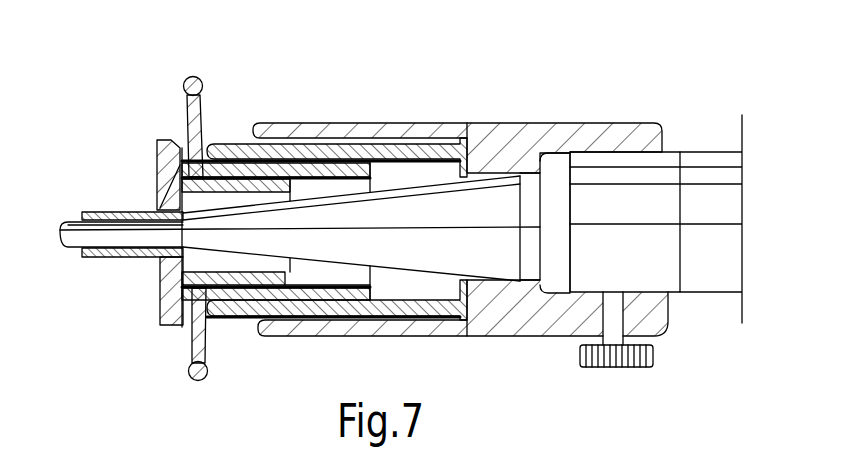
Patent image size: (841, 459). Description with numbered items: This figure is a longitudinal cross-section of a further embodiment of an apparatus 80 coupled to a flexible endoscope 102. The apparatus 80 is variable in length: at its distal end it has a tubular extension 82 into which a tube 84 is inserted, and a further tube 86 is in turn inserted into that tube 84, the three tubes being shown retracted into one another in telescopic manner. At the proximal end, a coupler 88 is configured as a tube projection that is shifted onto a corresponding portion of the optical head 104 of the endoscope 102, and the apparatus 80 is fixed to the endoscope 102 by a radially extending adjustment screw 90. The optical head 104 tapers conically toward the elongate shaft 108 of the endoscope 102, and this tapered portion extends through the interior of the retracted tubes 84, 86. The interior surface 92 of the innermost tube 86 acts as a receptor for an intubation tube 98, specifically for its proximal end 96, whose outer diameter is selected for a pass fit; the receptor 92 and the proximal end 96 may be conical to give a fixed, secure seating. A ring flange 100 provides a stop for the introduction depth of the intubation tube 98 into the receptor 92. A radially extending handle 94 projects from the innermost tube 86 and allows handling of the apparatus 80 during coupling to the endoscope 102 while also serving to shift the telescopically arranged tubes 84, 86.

The apparatus 80 is at (460, 122).
The tubular extension 82 is at (388, 132).
The tube 84 is at (317, 150).
The further tube 86 is at (242, 146).
The coupler 88 is at (585, 140).
The adjustment screw 90 is at (610, 368).
The interior surface 92 is at (207, 292).
The handle 94 is at (188, 347).
The proximal end 96 is at (186, 143).
The intubation tube 98 is at (93, 258).
The ring flange 100 is at (163, 160).
The endoscope 102 is at (684, 122).
The optical head 104 is at (643, 265).
The elongate shaft 108 is at (72, 216).